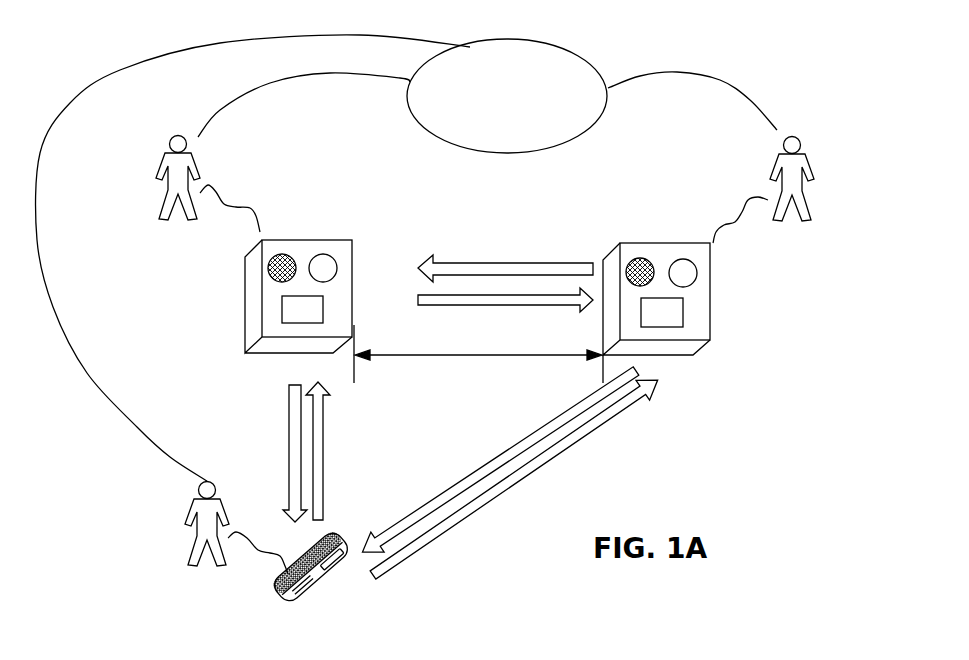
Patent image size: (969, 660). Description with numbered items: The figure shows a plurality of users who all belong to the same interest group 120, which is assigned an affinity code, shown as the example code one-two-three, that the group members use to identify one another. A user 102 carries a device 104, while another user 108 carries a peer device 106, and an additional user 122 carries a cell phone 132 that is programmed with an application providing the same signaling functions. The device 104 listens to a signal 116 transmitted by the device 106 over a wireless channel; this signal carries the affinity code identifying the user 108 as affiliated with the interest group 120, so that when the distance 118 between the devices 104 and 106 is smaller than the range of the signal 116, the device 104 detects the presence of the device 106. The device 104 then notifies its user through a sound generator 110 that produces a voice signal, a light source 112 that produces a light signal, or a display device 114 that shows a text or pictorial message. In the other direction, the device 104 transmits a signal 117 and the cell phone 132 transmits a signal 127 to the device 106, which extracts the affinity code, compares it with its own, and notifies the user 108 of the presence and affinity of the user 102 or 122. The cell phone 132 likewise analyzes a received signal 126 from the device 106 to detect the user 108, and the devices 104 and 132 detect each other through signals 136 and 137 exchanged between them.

The user 102 is at (162, 158).
The device 104 is at (293, 277).
The peer device 106 is at (645, 243).
The user 108 is at (810, 155).
The sound generator 110 is at (268, 275).
The light source 112 is at (337, 268).
The display device 114 is at (323, 308).
The signal 116 is at (503, 263).
The signal 117 is at (498, 305).
The distance 118 is at (452, 355).
The interest group 120 is at (572, 53).
The user 122 is at (188, 507).
The signal 126 is at (497, 458).
The signal 127 is at (513, 485).
The cell phone 132 is at (318, 590).
The signal 136 is at (288, 433).
The signal 137 is at (325, 442).